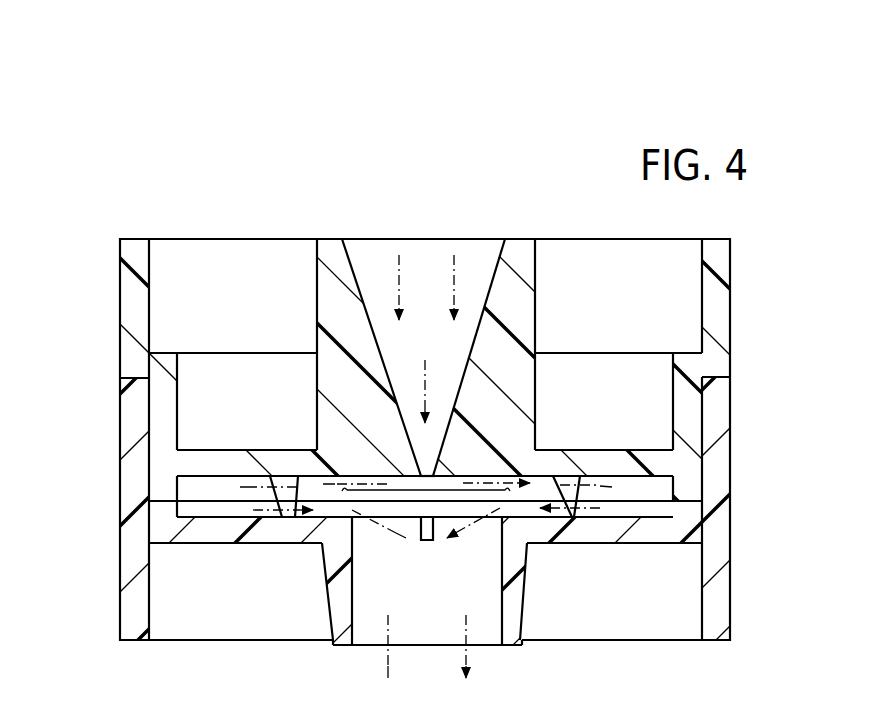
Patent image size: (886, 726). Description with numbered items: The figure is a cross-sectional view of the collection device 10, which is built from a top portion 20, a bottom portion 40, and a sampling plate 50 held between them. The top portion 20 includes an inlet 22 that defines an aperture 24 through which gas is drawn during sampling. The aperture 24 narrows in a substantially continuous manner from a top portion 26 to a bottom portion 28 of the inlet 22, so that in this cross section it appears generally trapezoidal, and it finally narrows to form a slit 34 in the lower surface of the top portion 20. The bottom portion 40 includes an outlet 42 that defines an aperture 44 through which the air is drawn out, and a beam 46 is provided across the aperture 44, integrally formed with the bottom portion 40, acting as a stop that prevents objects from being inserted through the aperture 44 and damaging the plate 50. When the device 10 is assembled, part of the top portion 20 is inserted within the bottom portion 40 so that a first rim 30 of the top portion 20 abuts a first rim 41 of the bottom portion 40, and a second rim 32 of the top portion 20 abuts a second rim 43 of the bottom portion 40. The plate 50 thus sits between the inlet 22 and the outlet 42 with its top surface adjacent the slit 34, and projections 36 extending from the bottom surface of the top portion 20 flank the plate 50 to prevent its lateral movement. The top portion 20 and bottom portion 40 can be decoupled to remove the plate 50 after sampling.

The collection device 10 is at (393, 123).
The top portion 20 is at (730, 302).
The inlet 22 is at (518, 252).
The aperture 24 is at (433, 248).
The top portion of inlet 26 is at (330, 240).
The bottom portion of inlet 28 is at (372, 476).
The first rim 30 is at (710, 377).
The second rim 32 is at (158, 503).
The slit 34 is at (427, 468).
The projections 36 is at (590, 495).
The bottom portion 40 is at (732, 528).
The first rim 41 is at (719, 381).
The outlet 42 is at (330, 573).
The second rim 43 is at (168, 497).
The aperture 44 is at (430, 628).
The beam 46 is at (433, 540).
The sampling plate 50 is at (522, 540).